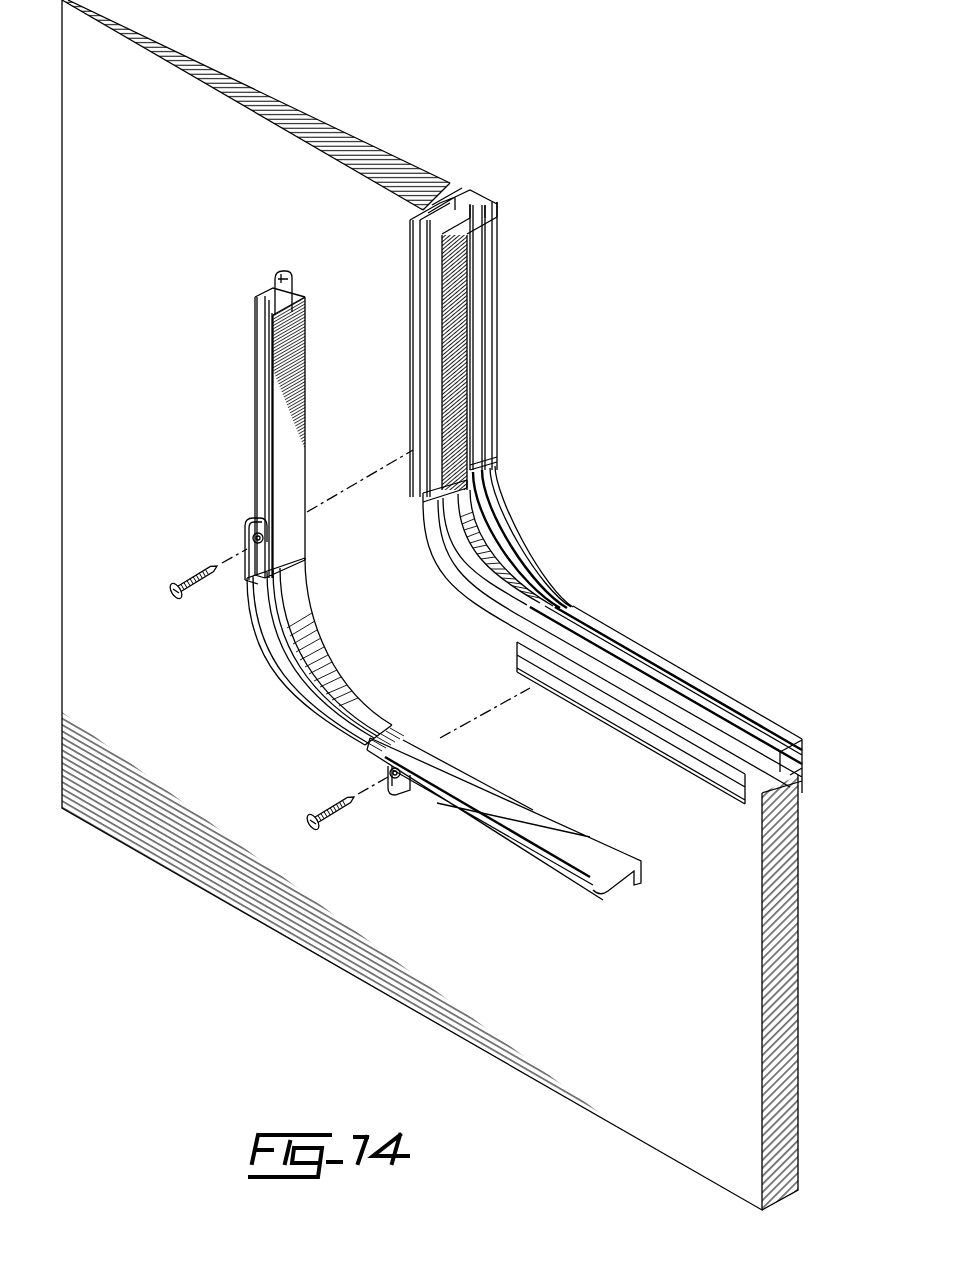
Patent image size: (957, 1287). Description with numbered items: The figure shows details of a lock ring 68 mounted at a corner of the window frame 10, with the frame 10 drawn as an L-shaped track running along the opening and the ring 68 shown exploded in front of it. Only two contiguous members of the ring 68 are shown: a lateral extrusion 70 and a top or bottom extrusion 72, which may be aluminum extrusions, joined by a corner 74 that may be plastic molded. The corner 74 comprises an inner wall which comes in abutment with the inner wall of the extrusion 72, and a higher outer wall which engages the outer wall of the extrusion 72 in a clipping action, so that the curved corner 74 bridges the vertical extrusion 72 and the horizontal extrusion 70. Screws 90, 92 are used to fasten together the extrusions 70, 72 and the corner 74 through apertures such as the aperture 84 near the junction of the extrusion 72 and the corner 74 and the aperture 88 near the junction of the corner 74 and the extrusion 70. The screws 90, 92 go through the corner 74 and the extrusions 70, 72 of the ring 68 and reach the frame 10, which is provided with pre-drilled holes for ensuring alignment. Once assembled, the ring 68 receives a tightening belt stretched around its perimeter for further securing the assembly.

The window frame 10 is at (472, 293).
The lock ring 68 is at (373, 628).
The lateral extrusion 70 is at (612, 893).
The top and bottom extrusion 72 is at (255, 393).
The corner 74 is at (295, 684).
The aperture 84 is at (252, 538).
The aperture 88 is at (392, 782).
The screw 90 is at (320, 830).
The screw 92 is at (188, 593).